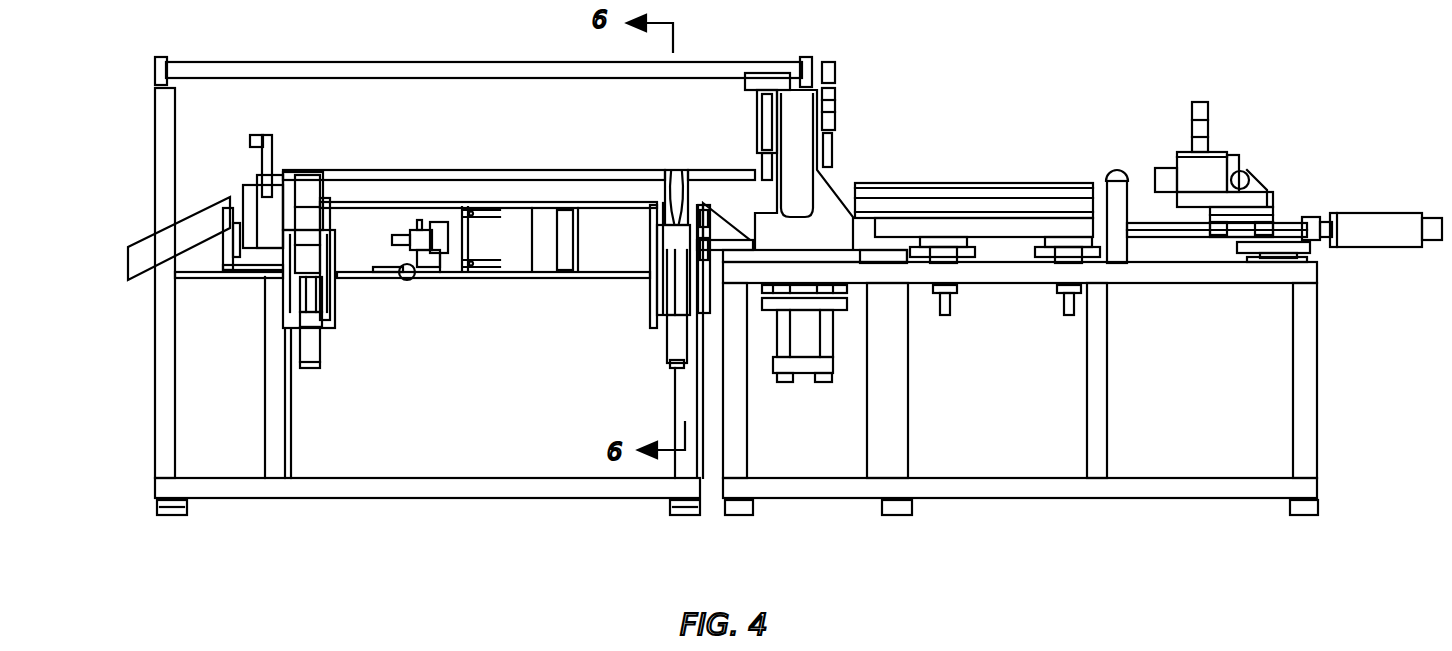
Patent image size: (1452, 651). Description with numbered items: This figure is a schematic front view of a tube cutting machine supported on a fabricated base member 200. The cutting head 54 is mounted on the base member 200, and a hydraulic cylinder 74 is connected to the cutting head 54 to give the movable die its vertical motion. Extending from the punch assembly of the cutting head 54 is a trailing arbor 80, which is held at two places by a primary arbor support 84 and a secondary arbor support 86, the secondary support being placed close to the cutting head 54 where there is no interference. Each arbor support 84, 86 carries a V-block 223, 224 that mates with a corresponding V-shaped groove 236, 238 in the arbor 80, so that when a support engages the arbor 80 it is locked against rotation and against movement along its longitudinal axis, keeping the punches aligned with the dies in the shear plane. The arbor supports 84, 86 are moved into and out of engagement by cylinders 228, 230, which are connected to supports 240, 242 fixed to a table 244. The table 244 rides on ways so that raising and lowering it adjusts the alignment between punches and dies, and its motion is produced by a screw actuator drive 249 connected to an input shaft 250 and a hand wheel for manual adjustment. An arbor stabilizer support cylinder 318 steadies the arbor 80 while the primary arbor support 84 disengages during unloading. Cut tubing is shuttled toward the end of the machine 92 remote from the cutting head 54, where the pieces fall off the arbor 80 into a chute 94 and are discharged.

The cutting head 54 is at (800, 118).
The hydraulic cylinder 74 is at (805, 382).
The trailing arbor 80 is at (543, 170).
The primary arbor support 84 is at (322, 330).
The secondary arbor support 86 is at (650, 292).
The end of the machine 92 is at (130, 338).
The chute 94 is at (128, 262).
The base member 200 is at (948, 498).
The V-block 223 is at (322, 192).
The V-block 224 is at (387, 225).
The cylinder 228 is at (308, 368).
The cylinder 230 is at (672, 372).
The V-shaped groove 236 is at (307, 173).
The V-shaped groove 238 is at (698, 170).
The support 240 is at (337, 310).
The support 242 is at (660, 332).
The table 244 is at (427, 514).
The screw actuator drive 249 is at (428, 280).
The input shaft 250 is at (455, 244).
The arbor stabilizer support cylinder 318 is at (268, 240).